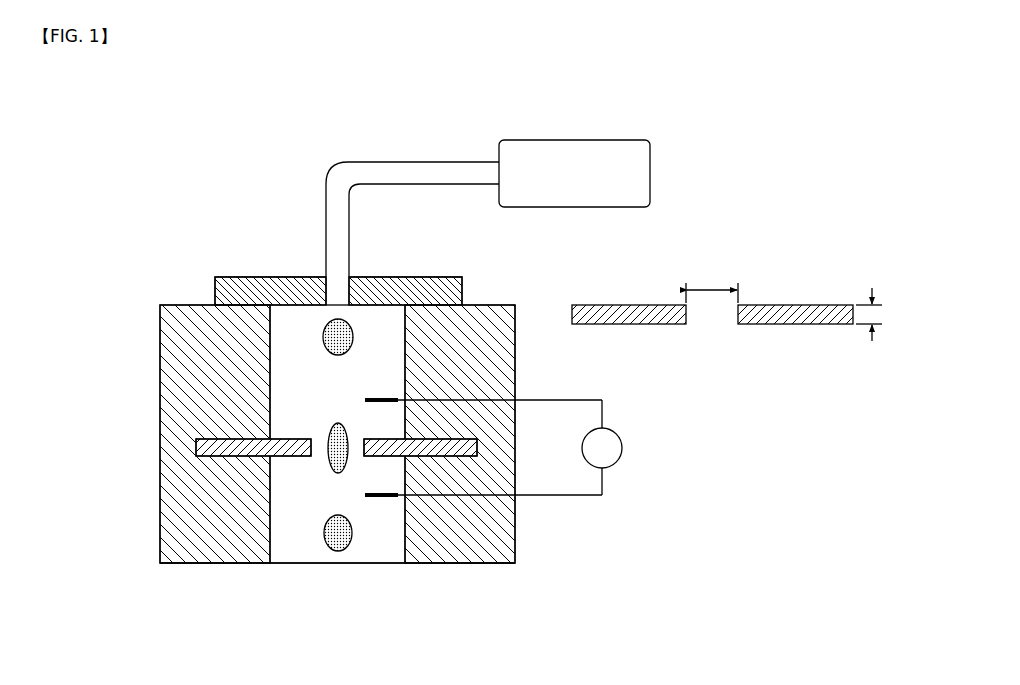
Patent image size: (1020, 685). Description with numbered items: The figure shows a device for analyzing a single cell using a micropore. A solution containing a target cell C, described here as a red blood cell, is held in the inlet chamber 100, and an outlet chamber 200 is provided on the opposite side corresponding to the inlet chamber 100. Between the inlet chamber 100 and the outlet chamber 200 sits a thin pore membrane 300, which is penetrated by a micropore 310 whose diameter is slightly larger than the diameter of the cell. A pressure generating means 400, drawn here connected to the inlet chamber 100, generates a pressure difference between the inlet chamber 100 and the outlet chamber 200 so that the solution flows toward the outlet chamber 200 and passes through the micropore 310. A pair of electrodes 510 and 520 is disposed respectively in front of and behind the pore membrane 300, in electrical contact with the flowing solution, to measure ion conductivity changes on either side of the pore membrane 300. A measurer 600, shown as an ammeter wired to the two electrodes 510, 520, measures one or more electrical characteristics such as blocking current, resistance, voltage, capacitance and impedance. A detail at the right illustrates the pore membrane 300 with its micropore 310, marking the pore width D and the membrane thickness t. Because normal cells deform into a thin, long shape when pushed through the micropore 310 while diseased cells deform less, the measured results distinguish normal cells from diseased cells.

The inlet chamber 100 is at (290, 353).
The outlet chamber 200 is at (290, 543).
The pore membrane 300 is at (196, 447).
The micropore 310 is at (327, 450).
The pressure generating means 400 is at (574, 140).
The electrode 510 is at (375, 396).
The electrode 520 is at (380, 500).
The measurer 600 is at (622, 440).
The target cell C is at (332, 551).
The gap width D is at (712, 283).
The plate thickness t is at (873, 314).